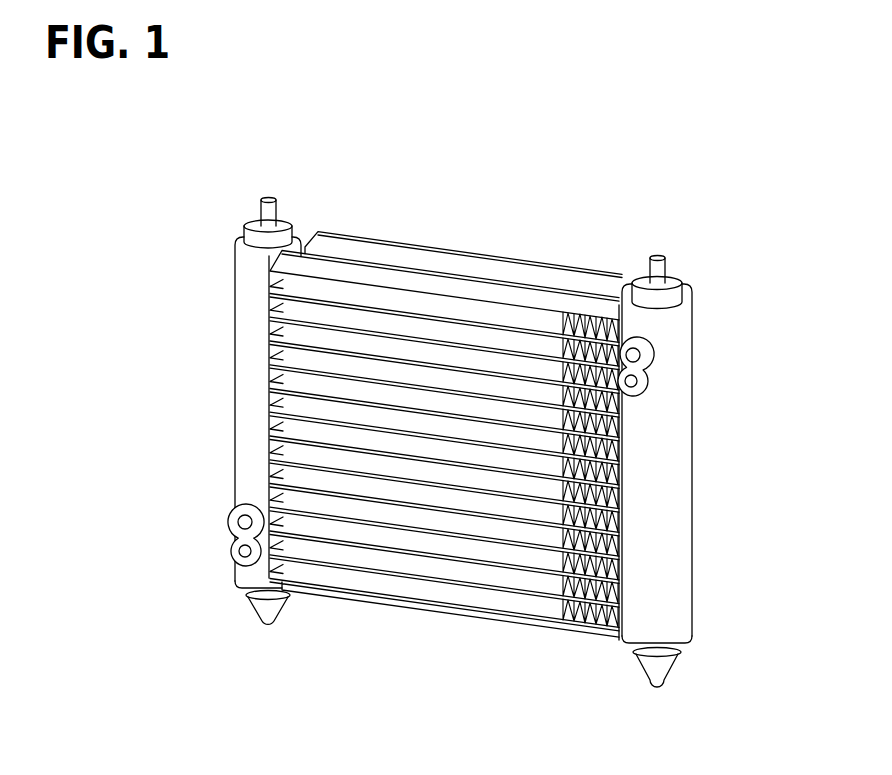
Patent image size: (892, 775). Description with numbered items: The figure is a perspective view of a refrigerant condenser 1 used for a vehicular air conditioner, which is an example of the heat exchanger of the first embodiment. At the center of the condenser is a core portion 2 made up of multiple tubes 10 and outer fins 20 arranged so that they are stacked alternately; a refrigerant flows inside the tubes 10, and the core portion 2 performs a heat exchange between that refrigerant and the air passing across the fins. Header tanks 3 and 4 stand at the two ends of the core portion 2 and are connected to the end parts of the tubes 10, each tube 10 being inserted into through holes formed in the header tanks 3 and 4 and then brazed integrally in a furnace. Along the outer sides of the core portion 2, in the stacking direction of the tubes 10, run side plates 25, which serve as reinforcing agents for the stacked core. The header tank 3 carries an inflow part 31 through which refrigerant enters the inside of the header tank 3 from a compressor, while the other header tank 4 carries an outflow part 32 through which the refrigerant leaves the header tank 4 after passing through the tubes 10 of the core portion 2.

The refrigerant condenser 1 is at (636, 140).
The core portion 2 is at (428, 138).
The tubes 10 is at (437, 292).
The outer fins 20 is at (557, 307).
The side plates 25 is at (371, 252).
The header tank 3 is at (693, 480).
The header tank 4 is at (250, 350).
The inflow part 31 is at (658, 350).
The outflow part 32 is at (228, 528).